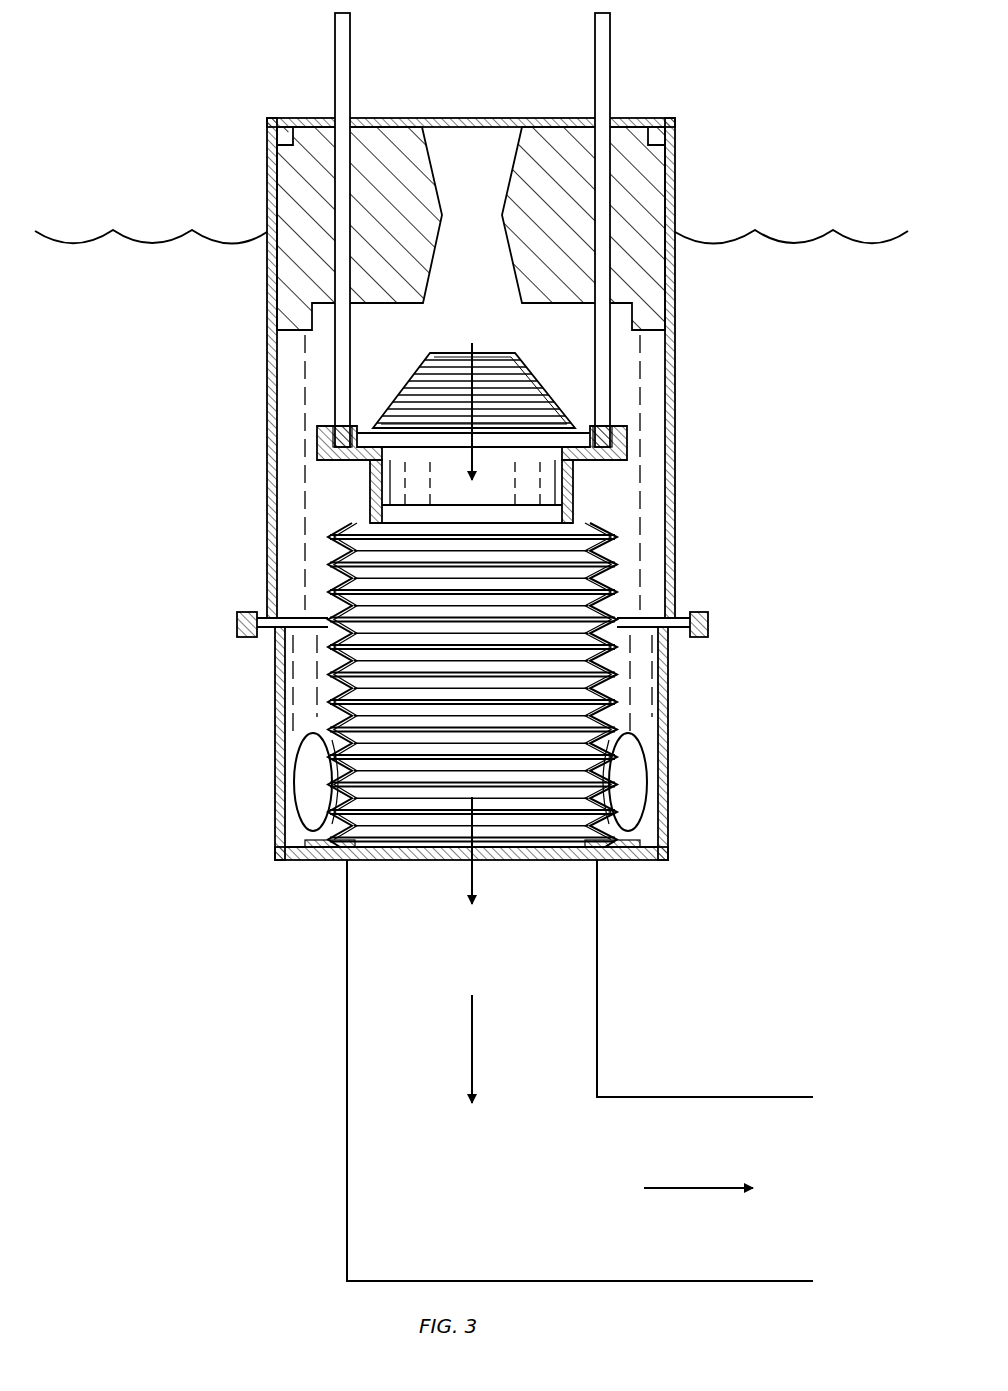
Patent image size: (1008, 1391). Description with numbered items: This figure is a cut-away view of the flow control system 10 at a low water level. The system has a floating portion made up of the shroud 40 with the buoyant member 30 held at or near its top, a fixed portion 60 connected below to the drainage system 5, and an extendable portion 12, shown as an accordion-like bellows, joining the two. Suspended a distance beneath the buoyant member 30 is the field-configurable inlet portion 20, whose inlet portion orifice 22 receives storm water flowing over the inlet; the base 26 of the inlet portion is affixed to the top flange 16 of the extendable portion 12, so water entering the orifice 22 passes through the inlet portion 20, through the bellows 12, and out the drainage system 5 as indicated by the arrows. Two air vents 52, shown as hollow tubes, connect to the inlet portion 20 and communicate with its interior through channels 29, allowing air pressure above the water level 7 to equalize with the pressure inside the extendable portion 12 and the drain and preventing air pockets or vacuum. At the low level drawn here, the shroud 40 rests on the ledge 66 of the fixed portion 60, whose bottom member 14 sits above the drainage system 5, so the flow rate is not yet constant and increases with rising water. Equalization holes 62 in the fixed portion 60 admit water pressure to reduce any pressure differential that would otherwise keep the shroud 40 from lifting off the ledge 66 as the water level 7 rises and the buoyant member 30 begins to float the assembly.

The drainage system 5 is at (530, 1192).
The water level 7 is at (770, 240).
The flow control system 10 is at (762, 362).
The extendable portion 12 is at (545, 666).
The bottom plate 14 is at (307, 849).
The top flange 16 is at (370, 489).
The field-configurable inlet portion 20 is at (438, 407).
The inlet portion orifice 22 is at (490, 345).
The base 26 is at (505, 491).
The channels 29 is at (585, 455).
The buoyant member 30 is at (645, 166).
The shroud 40 is at (672, 474).
The air vents 52 is at (350, 66).
The fixed portion 60 is at (663, 722).
The equalization holes 62 is at (640, 763).
The ledge 66 is at (262, 630).